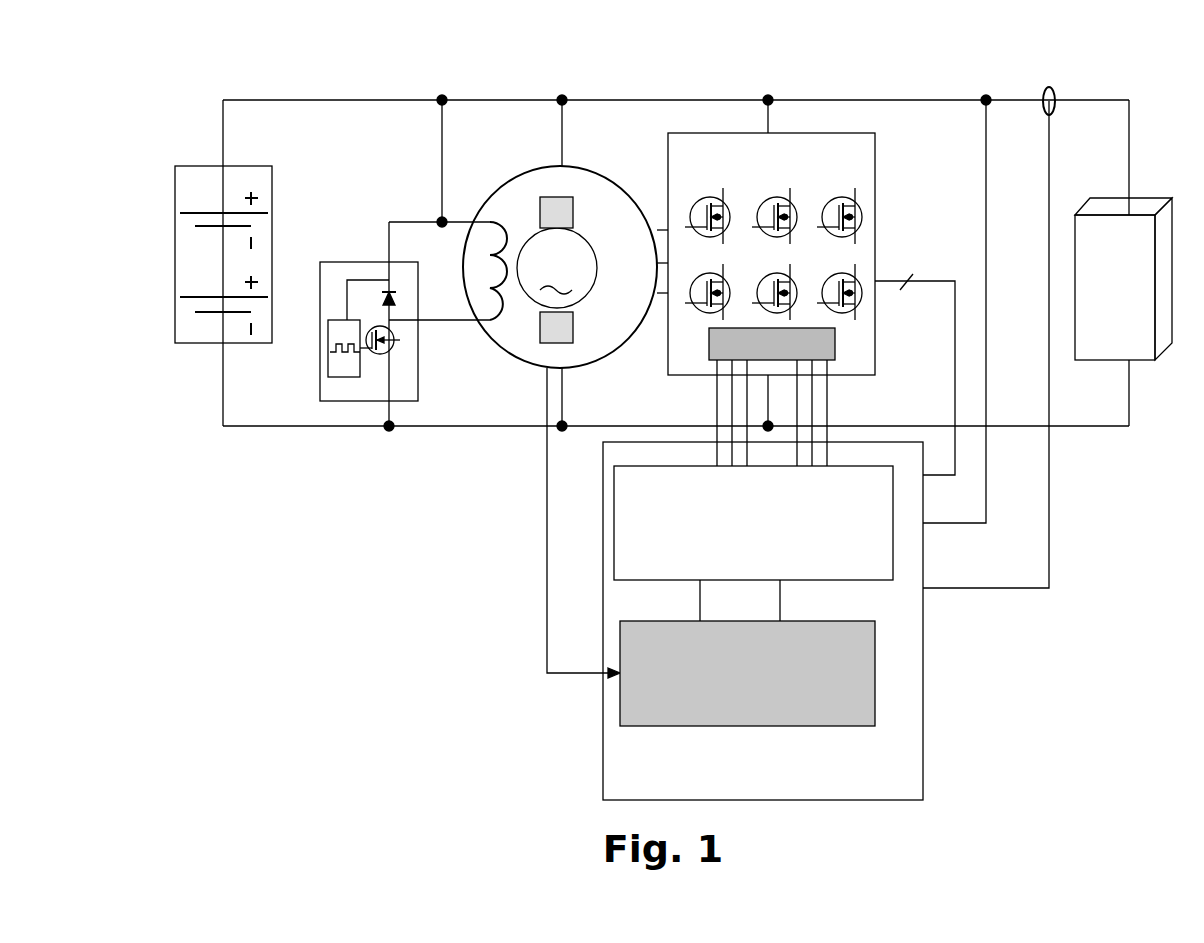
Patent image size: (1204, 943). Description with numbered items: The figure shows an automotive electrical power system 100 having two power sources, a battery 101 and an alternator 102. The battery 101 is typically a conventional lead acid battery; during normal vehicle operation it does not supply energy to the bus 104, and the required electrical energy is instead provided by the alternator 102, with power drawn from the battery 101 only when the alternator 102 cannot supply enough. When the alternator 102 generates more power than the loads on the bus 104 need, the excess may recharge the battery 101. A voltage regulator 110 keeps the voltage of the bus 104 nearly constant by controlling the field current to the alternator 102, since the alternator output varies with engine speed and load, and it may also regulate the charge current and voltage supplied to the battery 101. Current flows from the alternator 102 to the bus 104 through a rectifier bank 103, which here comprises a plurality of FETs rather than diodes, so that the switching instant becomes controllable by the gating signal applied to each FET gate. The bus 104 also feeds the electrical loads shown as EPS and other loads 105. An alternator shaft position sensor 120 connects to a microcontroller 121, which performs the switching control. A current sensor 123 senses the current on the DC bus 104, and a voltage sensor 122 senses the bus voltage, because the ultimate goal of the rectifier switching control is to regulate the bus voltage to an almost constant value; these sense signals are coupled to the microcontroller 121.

The automotive electrical power system 100 is at (653, 73).
The battery 101 is at (272, 195).
The alternator 102 is at (598, 170).
The rectifier bank 103 is at (877, 175).
The bus 104 is at (737, 97).
The EPS and other loads 105 is at (1130, 200).
The voltage regulator 110 is at (416, 349).
The alternator shaft position sensor 120 is at (546, 643).
The microcontroller 121 is at (924, 672).
The voltage sensor 122 is at (984, 98).
The current sensor 123 is at (1050, 88).